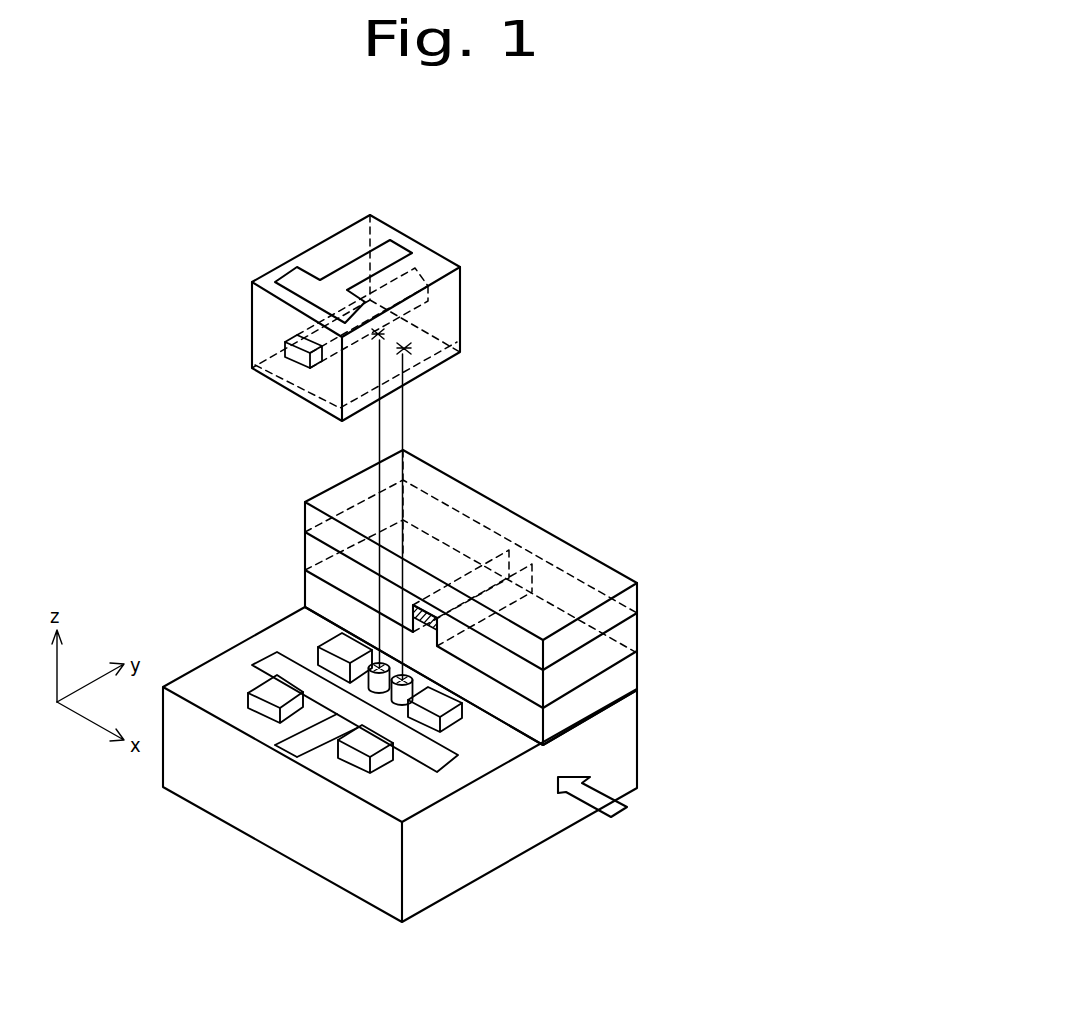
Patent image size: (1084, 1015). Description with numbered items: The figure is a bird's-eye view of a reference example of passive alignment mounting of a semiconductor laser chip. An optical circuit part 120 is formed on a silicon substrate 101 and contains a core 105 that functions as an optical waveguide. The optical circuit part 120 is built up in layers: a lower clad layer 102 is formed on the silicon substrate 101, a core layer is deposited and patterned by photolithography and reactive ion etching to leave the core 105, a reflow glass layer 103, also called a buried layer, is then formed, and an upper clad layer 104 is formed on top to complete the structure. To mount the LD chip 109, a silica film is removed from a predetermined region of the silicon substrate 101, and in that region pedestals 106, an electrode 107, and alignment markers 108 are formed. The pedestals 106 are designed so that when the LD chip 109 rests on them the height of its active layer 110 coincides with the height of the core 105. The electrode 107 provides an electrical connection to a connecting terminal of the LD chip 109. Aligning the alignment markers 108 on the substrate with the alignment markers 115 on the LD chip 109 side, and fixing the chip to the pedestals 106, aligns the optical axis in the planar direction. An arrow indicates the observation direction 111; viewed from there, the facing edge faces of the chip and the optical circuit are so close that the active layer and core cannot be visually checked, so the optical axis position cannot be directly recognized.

The silicon substrate 101 is at (626, 755).
The lower clad layer 102 is at (627, 677).
The reflow glass layer 103 is at (627, 644).
The upper clad layer 104 is at (627, 602).
The core 105 is at (428, 633).
The pedestals 106 is at (383, 763).
The electrode 107 is at (270, 666).
The alignment markers 108 is at (380, 680).
The LD chip 109 is at (340, 245).
The active layer 110 is at (285, 350).
The observation direction 111 is at (627, 808).
The alignment markers 115 is at (410, 352).
The optical circuit part 120 is at (313, 512).